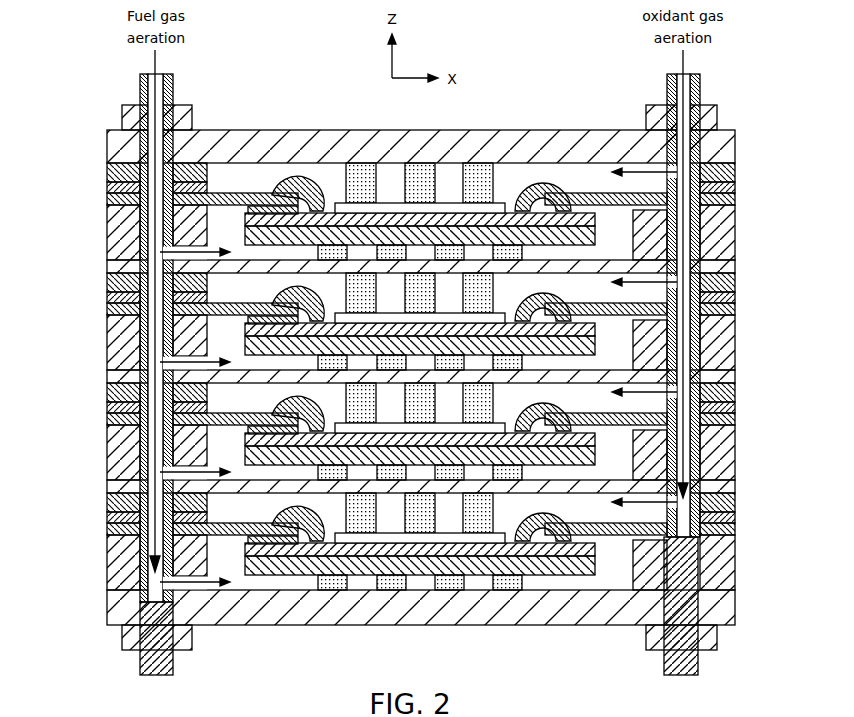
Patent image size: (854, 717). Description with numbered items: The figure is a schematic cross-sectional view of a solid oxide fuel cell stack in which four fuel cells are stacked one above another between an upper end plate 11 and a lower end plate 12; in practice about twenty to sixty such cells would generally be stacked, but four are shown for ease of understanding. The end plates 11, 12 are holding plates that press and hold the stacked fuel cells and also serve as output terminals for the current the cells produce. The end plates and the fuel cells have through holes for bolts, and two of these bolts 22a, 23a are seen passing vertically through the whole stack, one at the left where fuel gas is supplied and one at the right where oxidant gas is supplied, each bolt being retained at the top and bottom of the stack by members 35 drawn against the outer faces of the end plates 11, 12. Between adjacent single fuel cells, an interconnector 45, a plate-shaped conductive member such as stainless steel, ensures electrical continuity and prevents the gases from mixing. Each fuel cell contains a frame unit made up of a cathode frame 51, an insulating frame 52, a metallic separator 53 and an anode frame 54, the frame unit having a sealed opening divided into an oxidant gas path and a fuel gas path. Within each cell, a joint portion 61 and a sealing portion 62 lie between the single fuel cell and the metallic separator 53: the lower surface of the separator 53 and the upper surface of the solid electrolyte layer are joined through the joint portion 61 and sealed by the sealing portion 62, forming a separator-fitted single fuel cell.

The end plate 11 is at (107, 146).
The end plate 12 is at (107, 609).
The bolt 22a is at (140, 88).
The bolt 23a is at (700, 90).
The flange nut 35 is at (122, 116).
The interconnector 45 is at (720, 377).
The cathode frame 51 is at (735, 282).
The insulating frame 52 is at (735, 298).
The metallic separator 53 is at (735, 310).
The anode frame 54 is at (735, 338).
The joint portion 61 is at (247, 210).
The sealing portion 62 is at (283, 188).